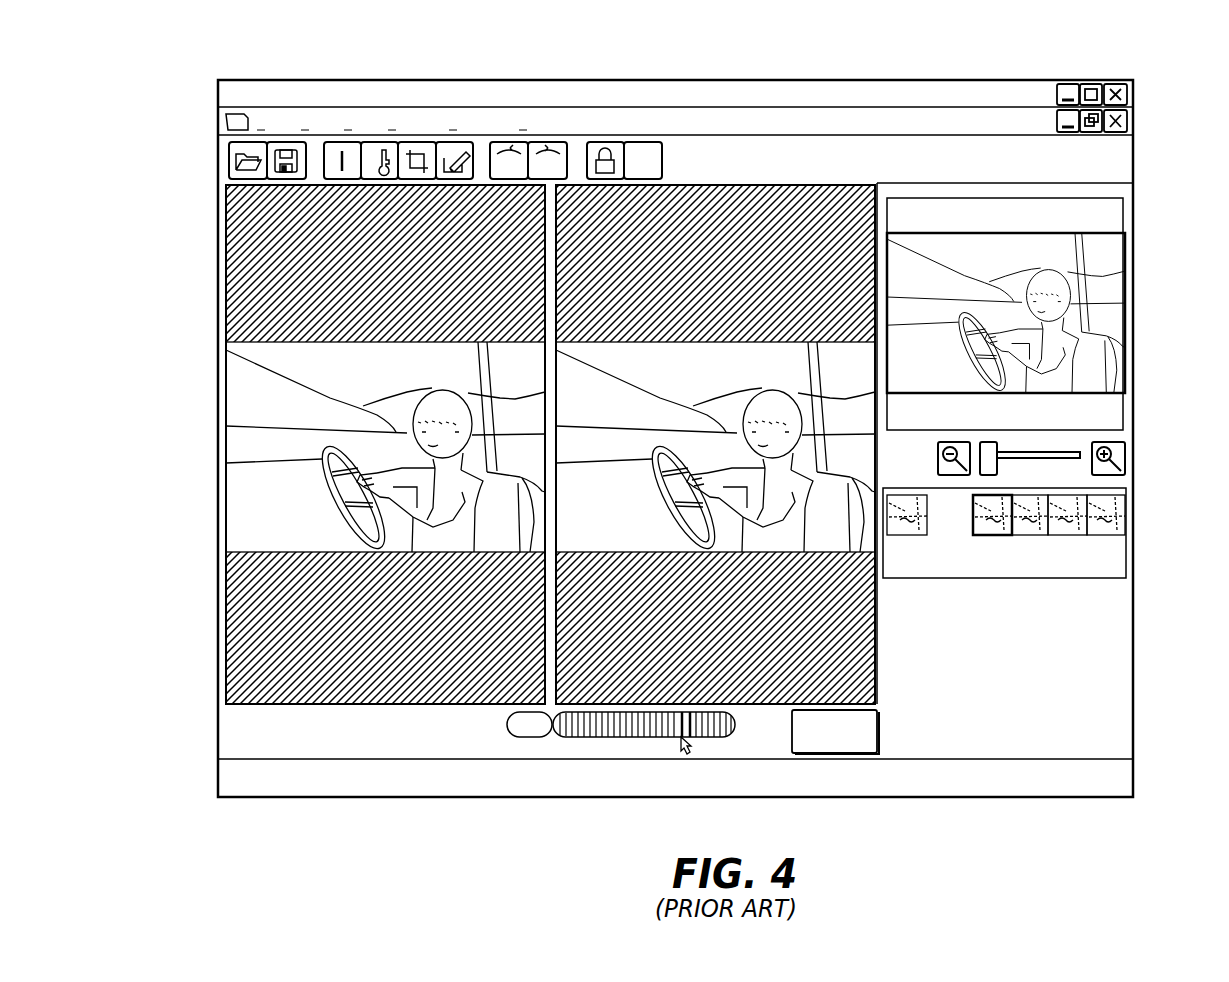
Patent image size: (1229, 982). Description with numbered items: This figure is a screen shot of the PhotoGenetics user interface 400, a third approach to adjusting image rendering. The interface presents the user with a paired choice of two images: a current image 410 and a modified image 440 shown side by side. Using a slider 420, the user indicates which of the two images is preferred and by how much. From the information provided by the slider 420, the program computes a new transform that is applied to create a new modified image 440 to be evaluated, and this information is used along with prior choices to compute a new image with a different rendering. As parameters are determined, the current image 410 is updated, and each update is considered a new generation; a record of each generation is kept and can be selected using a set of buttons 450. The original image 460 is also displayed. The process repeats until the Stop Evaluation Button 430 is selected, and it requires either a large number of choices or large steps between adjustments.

The user interface 400 is at (670, 426).
The current image 410 is at (220, 413).
The slider 420 is at (637, 738).
The Stop Evaluation Button 430 is at (838, 758).
The modified image 440 is at (823, 553).
The set of buttons 450 is at (1118, 517).
The original image 460 is at (1127, 307).